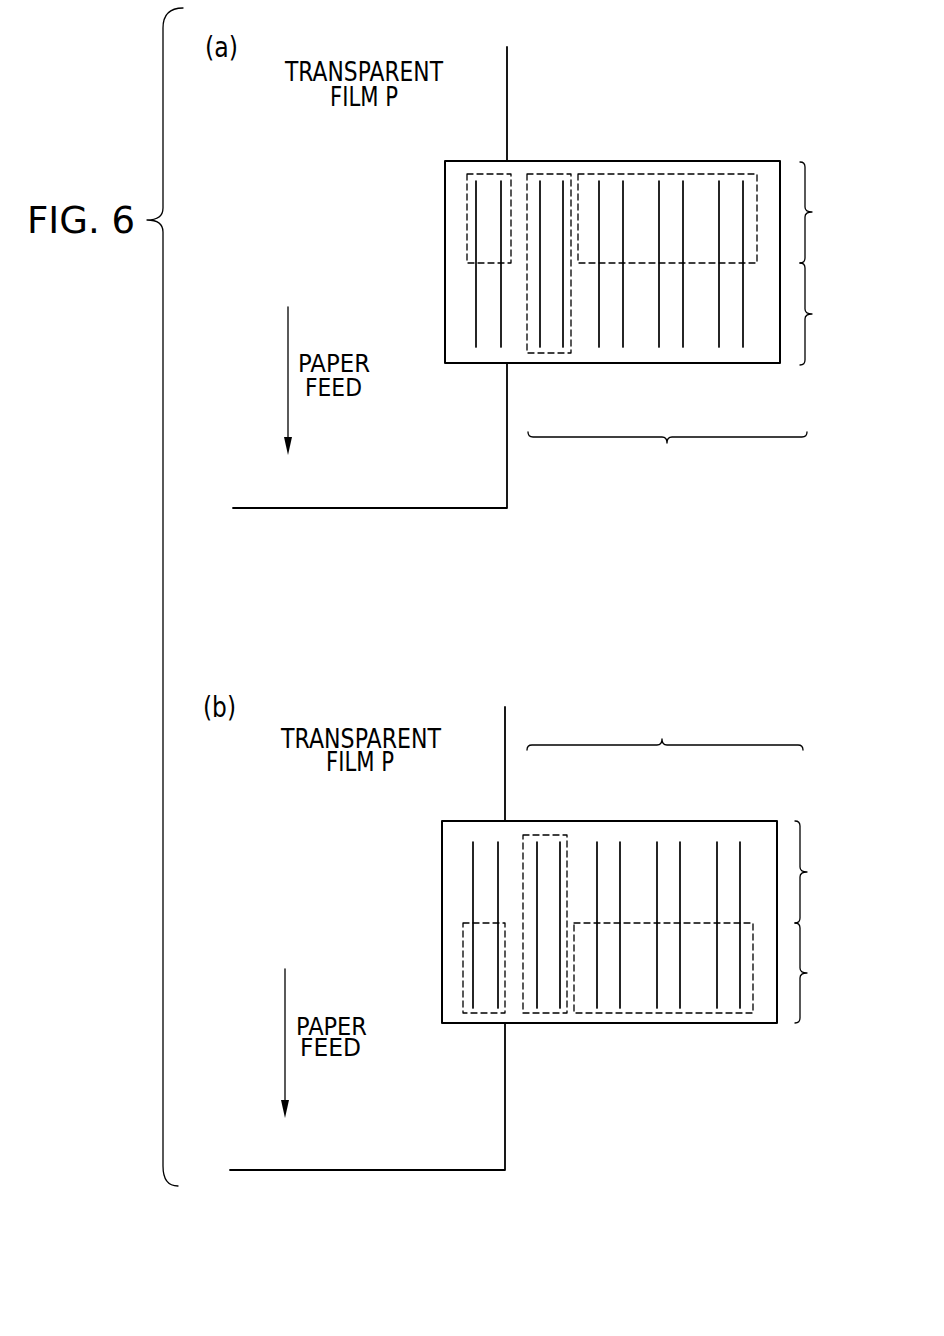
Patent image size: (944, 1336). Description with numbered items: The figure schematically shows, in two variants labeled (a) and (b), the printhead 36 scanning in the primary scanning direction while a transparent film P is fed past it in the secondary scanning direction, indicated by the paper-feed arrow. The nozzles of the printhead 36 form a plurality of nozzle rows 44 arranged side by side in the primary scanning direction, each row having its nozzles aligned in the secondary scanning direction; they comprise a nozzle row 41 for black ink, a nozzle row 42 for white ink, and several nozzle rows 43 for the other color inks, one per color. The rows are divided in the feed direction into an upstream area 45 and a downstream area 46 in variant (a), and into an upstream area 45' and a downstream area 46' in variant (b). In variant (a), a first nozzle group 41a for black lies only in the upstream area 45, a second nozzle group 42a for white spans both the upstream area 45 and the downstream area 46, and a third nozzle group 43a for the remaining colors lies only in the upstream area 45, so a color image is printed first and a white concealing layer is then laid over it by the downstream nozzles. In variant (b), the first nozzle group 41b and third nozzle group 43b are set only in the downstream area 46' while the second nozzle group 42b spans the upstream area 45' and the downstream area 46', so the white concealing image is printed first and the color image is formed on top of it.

The printhead 36 is at (618, 160).
The nozzle row 41 is at (476, 347).
The nozzle row 42 is at (540, 347).
The nozzle rows 43 is at (599, 347).
The nozzle rows 44 is at (667, 591).
The first nozzle group 41a is at (468, 203).
The second nozzle group 42a is at (545, 173).
The third nozzle group 43a is at (673, 173).
The first nozzle group 41b is at (462, 977).
The second nozzle group 42b is at (538, 1013).
The third nozzle group 43b is at (697, 1013).
The upstream area 45 is at (819, 212).
The downstream area 46 is at (819, 314).
The upstream area 45' is at (817, 872).
The downstream area 46' is at (817, 973).